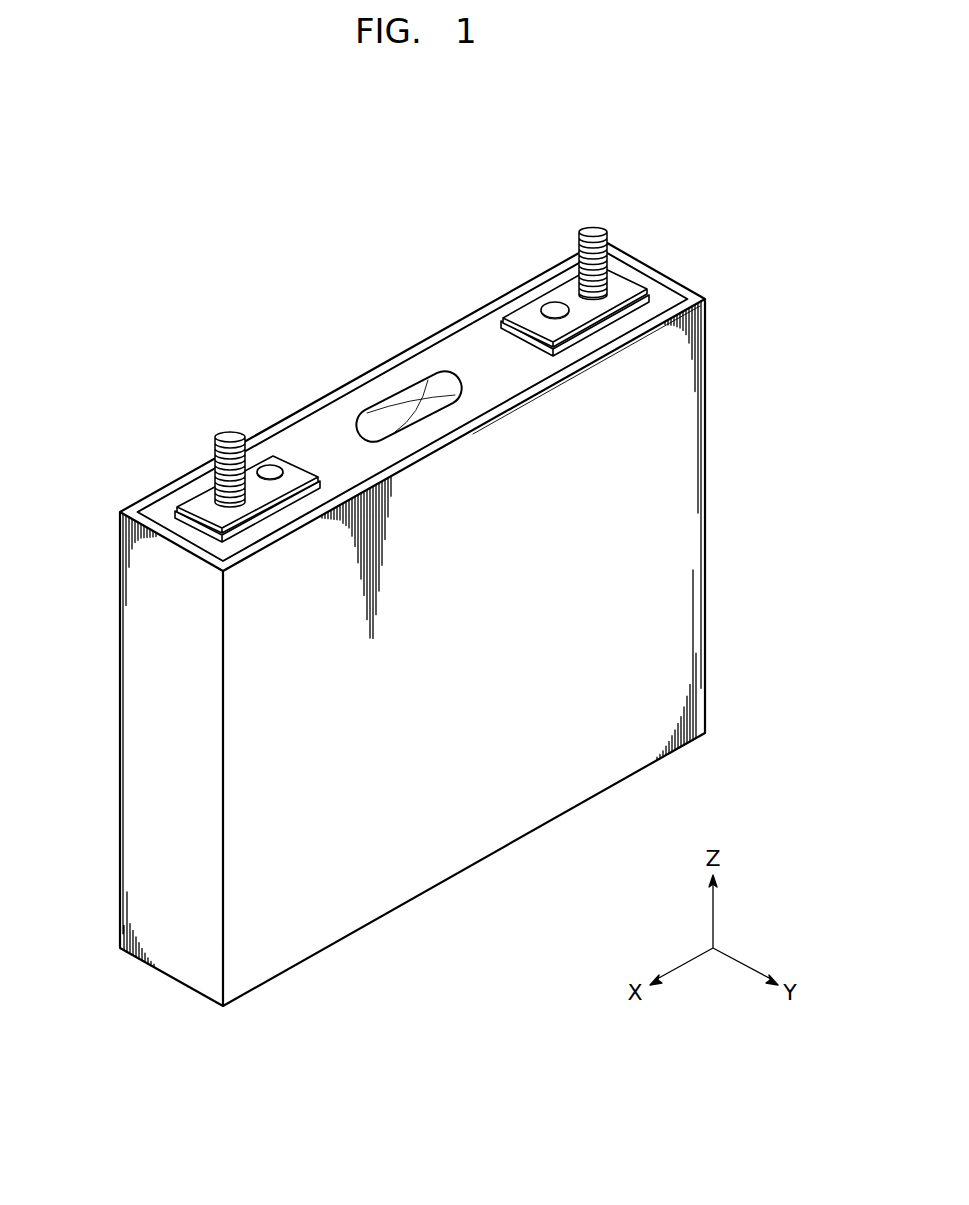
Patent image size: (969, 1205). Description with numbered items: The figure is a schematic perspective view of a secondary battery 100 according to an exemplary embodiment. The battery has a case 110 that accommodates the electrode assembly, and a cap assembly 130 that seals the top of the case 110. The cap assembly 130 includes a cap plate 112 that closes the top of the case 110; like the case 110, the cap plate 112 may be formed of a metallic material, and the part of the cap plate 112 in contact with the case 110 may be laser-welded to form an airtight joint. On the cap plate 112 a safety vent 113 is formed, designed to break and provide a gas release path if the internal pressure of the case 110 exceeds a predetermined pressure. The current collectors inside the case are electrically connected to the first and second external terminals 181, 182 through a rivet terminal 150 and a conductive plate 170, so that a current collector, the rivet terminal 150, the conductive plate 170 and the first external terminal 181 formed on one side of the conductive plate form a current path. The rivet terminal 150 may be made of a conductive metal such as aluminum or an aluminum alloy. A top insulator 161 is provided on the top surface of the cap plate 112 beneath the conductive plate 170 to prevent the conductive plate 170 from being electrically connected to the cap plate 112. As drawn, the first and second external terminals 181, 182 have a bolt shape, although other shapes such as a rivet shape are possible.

The secondary battery 100 is at (757, 177).
The case 110 is at (707, 566).
The cap plate 112 is at (665, 297).
The safety vent 113 is at (398, 393).
The cap assembly 130 is at (468, 349).
The rivet terminal 150 is at (270, 466).
The top insulator 161 is at (176, 514).
The conductive plate 170 is at (200, 503).
The first external terminal 181 is at (225, 437).
The second external terminal 182 is at (598, 228).